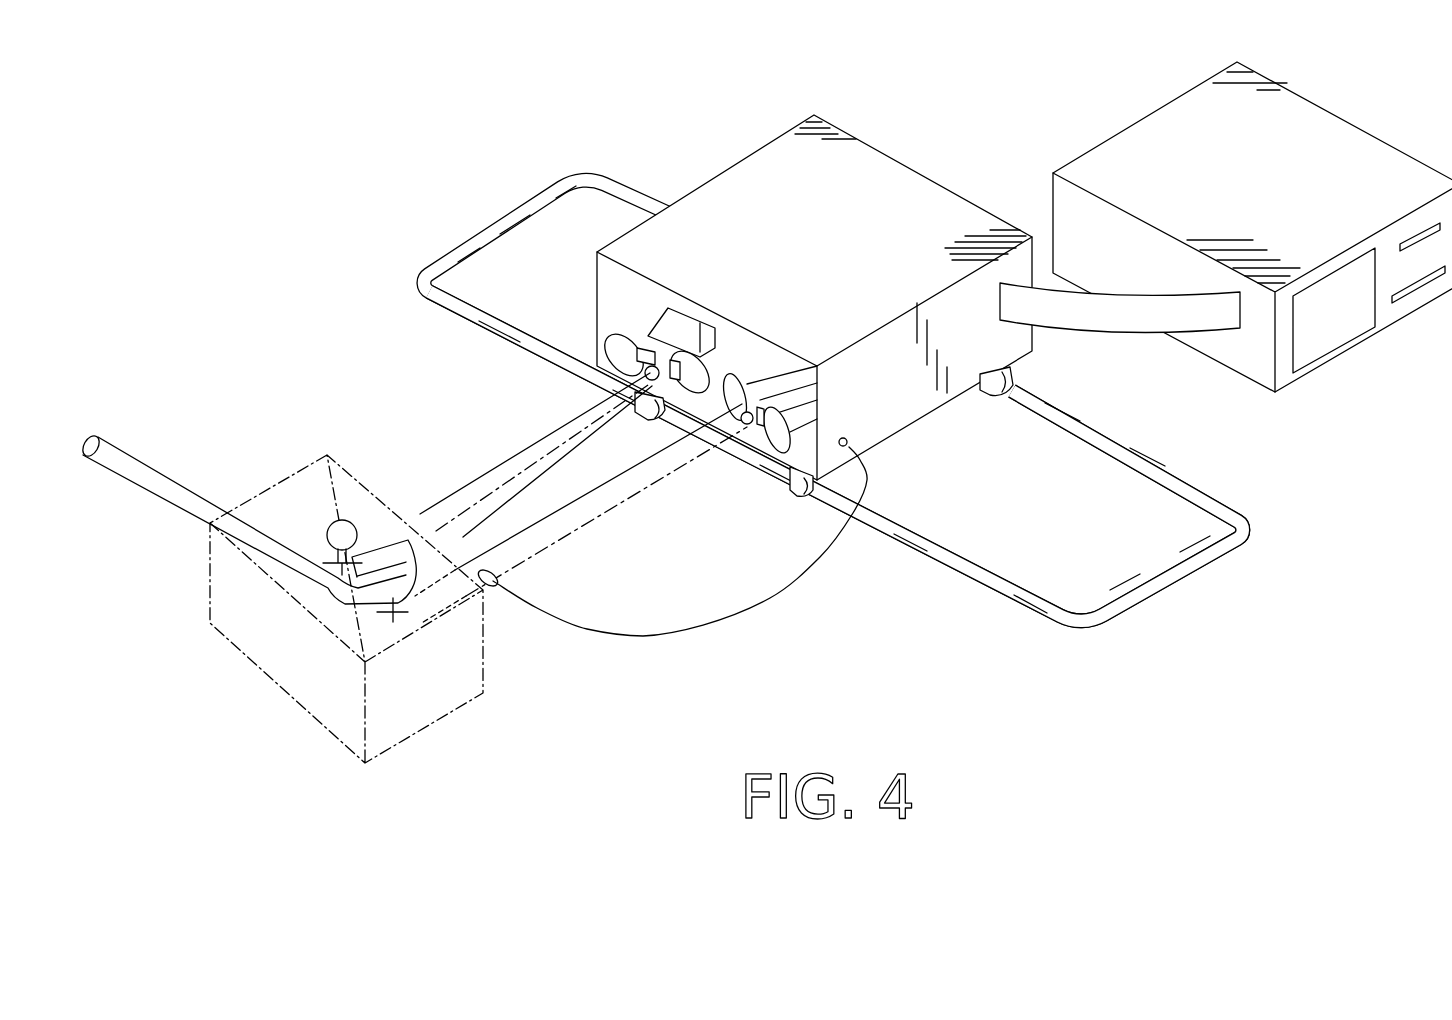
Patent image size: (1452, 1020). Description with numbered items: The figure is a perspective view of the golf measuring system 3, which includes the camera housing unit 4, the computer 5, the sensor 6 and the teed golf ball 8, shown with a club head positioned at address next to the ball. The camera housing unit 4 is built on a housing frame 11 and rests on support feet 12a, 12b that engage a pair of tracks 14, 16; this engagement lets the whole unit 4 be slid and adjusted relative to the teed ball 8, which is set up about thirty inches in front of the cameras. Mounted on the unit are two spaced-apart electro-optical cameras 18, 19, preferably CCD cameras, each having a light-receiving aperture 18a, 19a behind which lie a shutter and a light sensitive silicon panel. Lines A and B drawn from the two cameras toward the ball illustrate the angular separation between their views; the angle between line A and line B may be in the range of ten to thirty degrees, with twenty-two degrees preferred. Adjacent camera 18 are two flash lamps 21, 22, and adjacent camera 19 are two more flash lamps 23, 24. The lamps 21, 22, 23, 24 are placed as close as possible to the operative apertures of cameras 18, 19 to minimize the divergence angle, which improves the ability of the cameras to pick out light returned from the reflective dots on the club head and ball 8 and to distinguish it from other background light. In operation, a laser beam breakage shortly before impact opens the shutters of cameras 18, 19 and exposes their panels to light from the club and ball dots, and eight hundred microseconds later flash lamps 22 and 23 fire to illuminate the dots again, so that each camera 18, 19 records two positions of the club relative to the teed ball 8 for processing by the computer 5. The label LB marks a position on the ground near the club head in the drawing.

The system 3 is at (880, 132).
The camera housing unit 4 is at (731, 148).
The computer 5 is at (1343, 366).
The sensor 6 is at (498, 592).
The teed golf ball 8 is at (324, 526).
The housing frame 11 is at (1044, 355).
The support foot 12a is at (990, 410).
The support foot 12b is at (640, 428).
The track 14 is at (1164, 493).
The track 16 is at (894, 518).
The camera 18 is at (682, 330).
The light-receiving aperture 18a is at (666, 310).
The camera 19 is at (794, 393).
The light-receiving aperture 19a is at (747, 425).
The flash lamp 21 is at (612, 348).
The flash lamp 22 is at (698, 376).
The flash lamp 23 is at (736, 395).
The flash lamp 24 is at (792, 432).
The line A is at (616, 496).
The line B is at (522, 480).
The ball launch position LB is at (424, 612).